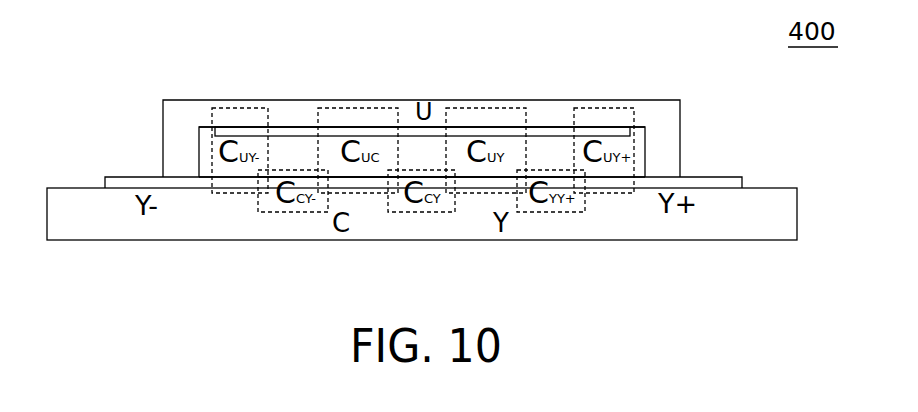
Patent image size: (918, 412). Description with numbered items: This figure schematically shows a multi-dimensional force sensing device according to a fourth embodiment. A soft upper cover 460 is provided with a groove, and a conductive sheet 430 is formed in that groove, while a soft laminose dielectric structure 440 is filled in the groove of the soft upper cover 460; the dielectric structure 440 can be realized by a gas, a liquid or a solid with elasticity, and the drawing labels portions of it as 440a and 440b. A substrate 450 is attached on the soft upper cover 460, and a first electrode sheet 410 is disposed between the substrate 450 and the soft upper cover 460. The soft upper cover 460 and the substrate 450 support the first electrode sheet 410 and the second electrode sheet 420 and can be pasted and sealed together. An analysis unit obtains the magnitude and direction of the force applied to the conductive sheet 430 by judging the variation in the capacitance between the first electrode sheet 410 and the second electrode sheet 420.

The first electrode sheet 410 is at (372, 183).
The second electrode sheet 420 is at (105, 184).
The conductive sheet 430 is at (617, 124).
The soft laminose dielectric structure 440 is at (645, 150).
The upper portion of shielding electrode 440a is at (225, 113).
The lower portion of shielding electrode 440b is at (236, 183).
The substrate 450 is at (745, 226).
The soft upper cover 460 is at (548, 107).